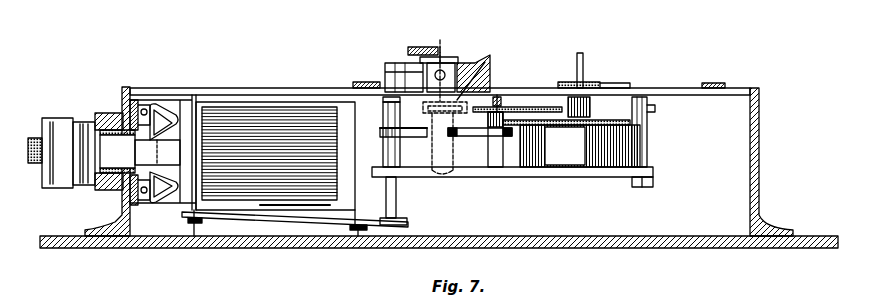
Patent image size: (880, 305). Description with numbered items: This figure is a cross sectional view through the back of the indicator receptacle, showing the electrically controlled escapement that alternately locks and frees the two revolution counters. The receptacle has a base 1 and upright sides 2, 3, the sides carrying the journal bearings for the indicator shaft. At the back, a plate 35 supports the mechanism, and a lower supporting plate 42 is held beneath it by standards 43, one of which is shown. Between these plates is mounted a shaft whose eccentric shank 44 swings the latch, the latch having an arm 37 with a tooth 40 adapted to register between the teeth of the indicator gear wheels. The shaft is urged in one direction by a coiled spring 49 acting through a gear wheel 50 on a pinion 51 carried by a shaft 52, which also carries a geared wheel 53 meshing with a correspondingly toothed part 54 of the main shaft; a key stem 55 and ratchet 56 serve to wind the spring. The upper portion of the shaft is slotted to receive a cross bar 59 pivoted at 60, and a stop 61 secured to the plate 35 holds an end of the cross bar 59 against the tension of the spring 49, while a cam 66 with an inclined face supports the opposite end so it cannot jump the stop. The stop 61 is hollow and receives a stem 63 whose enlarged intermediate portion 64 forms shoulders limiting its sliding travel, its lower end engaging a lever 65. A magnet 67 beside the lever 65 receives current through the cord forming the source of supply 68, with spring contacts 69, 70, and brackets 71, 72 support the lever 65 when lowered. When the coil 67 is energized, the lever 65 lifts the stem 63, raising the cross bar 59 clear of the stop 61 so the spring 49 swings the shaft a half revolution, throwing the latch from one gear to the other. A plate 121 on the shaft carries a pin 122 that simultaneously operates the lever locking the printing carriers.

The base 1 is at (166, 248).
The side 2 is at (122, 213).
The side 3 is at (759, 152).
The plate 35 is at (214, 88).
The arm 37 is at (472, 138).
The tooth 40 is at (382, 131).
The lower supporting plate 42 is at (520, 178).
The standard 43 is at (648, 112).
The eccentric shank 44 is at (436, 150).
The coiled spring 49 is at (571, 143).
The gear wheel 50 is at (640, 100).
The pinion 51 is at (492, 140).
The shaft 52 is at (506, 103).
The geared wheel 53 is at (548, 113).
The toothed part 54 is at (460, 100).
The key stem 55 is at (585, 60).
The ratchet 56 is at (604, 84).
The cross bar 59 is at (484, 55).
The pivot 60 is at (442, 70).
The stop 61 is at (376, 80).
The stem 63 is at (390, 100).
The intermediate portion 64 is at (386, 155).
The lever 65 is at (300, 226).
The cam 66 is at (492, 102).
The magnet 67 is at (252, 112).
The source of supply 68 is at (38, 140).
The spring contact 69 is at (152, 103).
The spring contact 70 is at (153, 203).
The bracket 71 is at (194, 238).
The bracket 72 is at (356, 234).
The plate 121 is at (450, 62).
The pin 122 is at (420, 47).